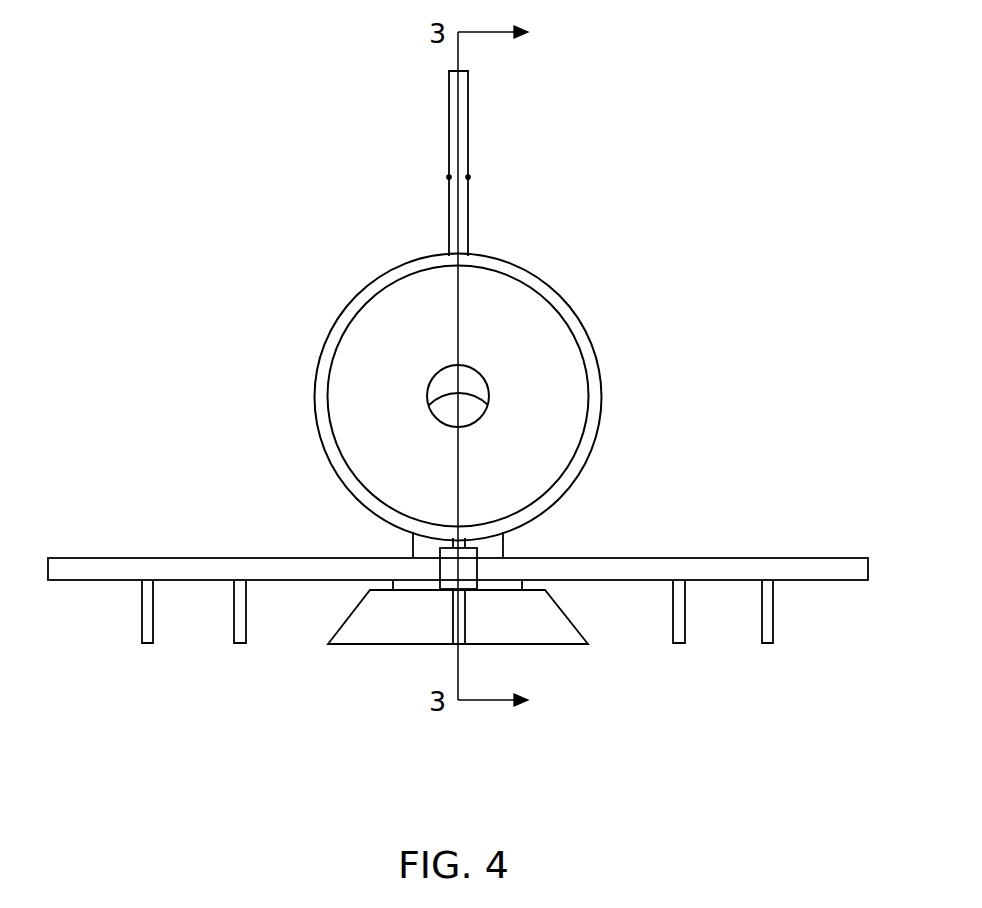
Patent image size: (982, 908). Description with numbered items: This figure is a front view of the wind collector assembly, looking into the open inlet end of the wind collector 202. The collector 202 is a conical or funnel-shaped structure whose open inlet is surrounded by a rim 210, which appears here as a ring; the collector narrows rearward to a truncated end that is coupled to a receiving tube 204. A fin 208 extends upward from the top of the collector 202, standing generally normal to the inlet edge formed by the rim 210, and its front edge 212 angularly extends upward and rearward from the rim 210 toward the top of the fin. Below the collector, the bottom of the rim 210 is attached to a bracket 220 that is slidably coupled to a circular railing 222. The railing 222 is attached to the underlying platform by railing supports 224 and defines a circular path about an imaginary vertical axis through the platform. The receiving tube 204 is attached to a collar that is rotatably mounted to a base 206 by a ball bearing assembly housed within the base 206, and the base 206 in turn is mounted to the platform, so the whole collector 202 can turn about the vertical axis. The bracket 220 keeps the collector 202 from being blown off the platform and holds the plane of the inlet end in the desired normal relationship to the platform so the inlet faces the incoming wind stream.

The wind collector 202 is at (540, 323).
The receiving tube 204 is at (423, 551).
The base 206 is at (533, 630).
The fin 208 is at (475, 77).
The rim 210 is at (585, 337).
The front edge 212 is at (463, 158).
The bracket 220 is at (468, 566).
The circular railing 222 is at (713, 568).
The railing supports 224 is at (147, 637).